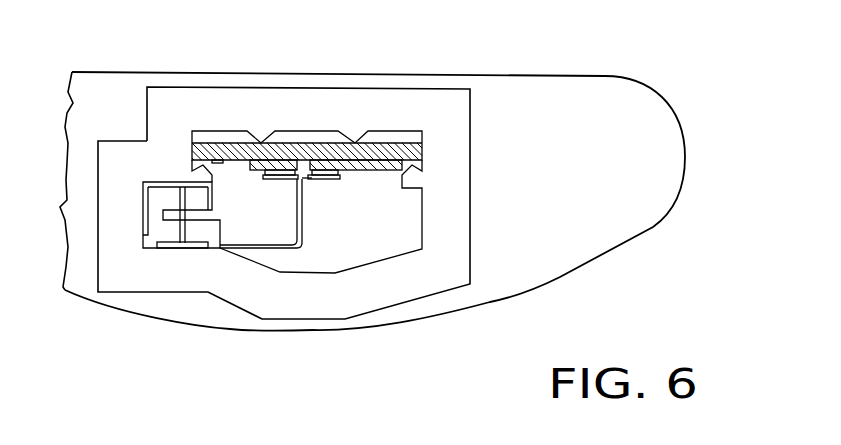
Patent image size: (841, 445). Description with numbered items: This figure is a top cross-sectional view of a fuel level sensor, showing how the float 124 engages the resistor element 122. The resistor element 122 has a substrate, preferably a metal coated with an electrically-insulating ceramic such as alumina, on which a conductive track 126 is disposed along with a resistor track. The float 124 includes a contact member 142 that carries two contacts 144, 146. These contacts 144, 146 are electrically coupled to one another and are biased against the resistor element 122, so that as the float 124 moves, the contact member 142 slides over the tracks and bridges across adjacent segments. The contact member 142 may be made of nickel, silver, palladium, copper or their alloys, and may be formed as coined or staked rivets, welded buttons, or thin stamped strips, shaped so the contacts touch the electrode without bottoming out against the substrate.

The resistor element 122 is at (226, 141).
The float 124 is at (668, 107).
The conductive track 126 is at (251, 171).
The contact member 142 is at (255, 248).
The contact 144 is at (273, 178).
The contact 146 is at (327, 178).